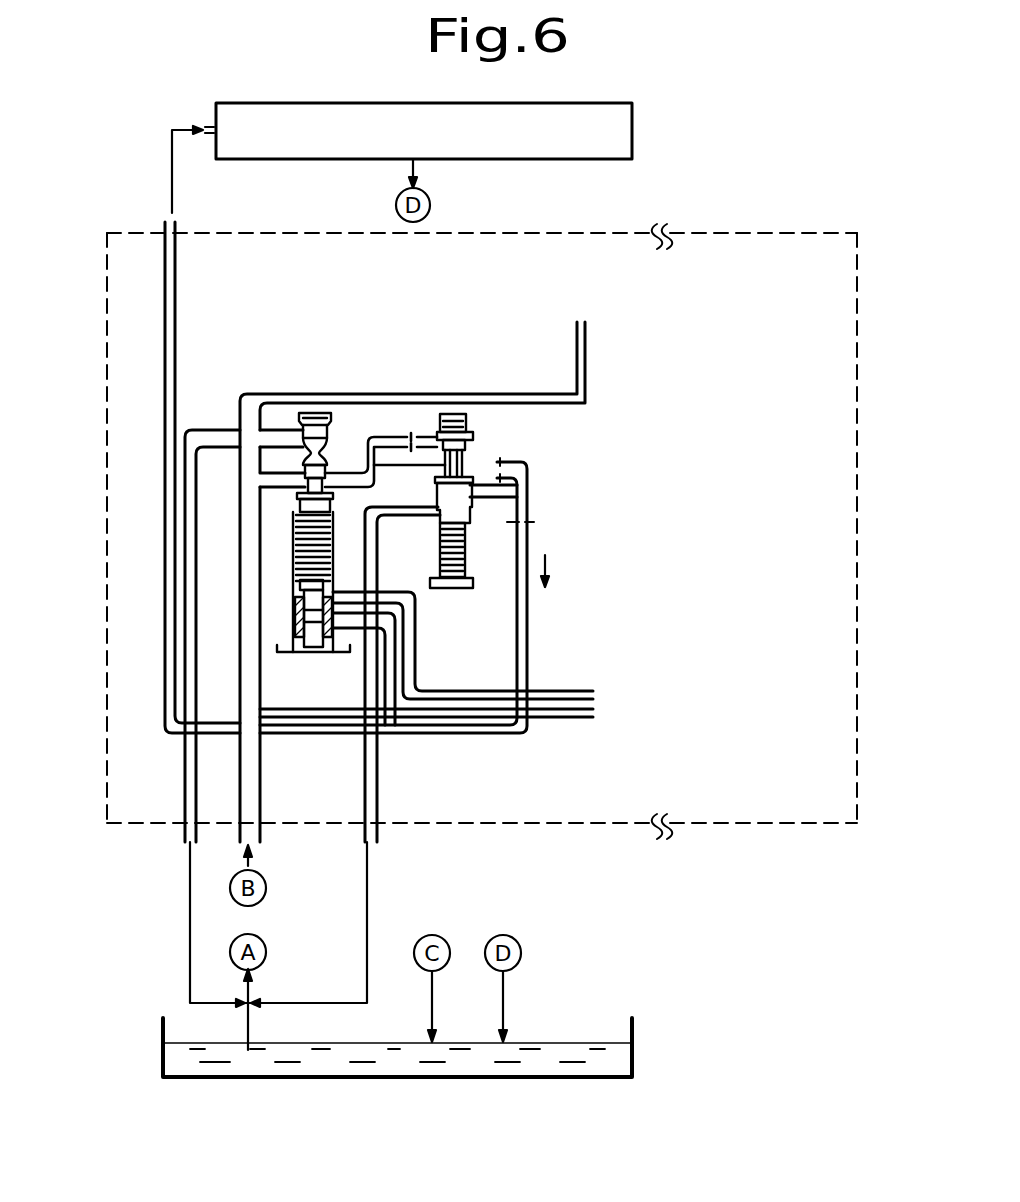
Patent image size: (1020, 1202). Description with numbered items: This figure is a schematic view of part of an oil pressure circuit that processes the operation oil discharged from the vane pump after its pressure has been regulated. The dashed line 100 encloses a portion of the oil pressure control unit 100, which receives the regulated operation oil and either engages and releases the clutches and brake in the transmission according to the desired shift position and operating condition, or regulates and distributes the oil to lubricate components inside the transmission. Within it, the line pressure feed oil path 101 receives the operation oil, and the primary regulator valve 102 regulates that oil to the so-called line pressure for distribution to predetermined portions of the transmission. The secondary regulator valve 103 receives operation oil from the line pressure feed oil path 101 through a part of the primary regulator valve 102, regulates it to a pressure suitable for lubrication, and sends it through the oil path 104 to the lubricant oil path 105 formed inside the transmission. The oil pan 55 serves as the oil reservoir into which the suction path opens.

The oil pan 55 is at (642, 1038).
The oil pressure control unit 100 is at (107, 350).
The line pressure feed oil path 101 is at (256, 679).
The primary regulator valve 102 is at (340, 425).
The secondary regulator valve 103 is at (415, 421).
The oil path 104 is at (521, 659).
The lubricant oil path 105 is at (633, 112).